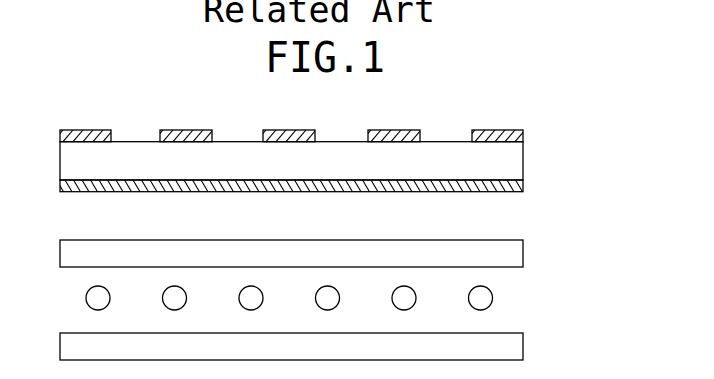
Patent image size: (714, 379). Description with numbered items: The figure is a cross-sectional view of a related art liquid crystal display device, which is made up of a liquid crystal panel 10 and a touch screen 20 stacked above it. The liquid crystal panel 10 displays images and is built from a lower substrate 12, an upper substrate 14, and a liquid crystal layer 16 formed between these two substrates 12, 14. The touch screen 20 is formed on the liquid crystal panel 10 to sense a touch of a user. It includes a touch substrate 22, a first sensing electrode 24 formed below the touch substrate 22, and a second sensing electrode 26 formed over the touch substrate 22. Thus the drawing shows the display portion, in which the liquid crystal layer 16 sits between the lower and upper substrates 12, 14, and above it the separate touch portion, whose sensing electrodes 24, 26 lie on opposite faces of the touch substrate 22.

The liquid crystal panel 10 is at (347, 300).
The lower substrate 12 is at (328, 346).
The upper substrate 14 is at (517, 253).
The liquid crystal layer 16 is at (517, 298).
The touch screen 20 is at (345, 160).
The touch substrate 22 is at (517, 162).
The first sensing electrode 24 is at (327, 185).
The second sensing electrode 26 is at (523, 134).